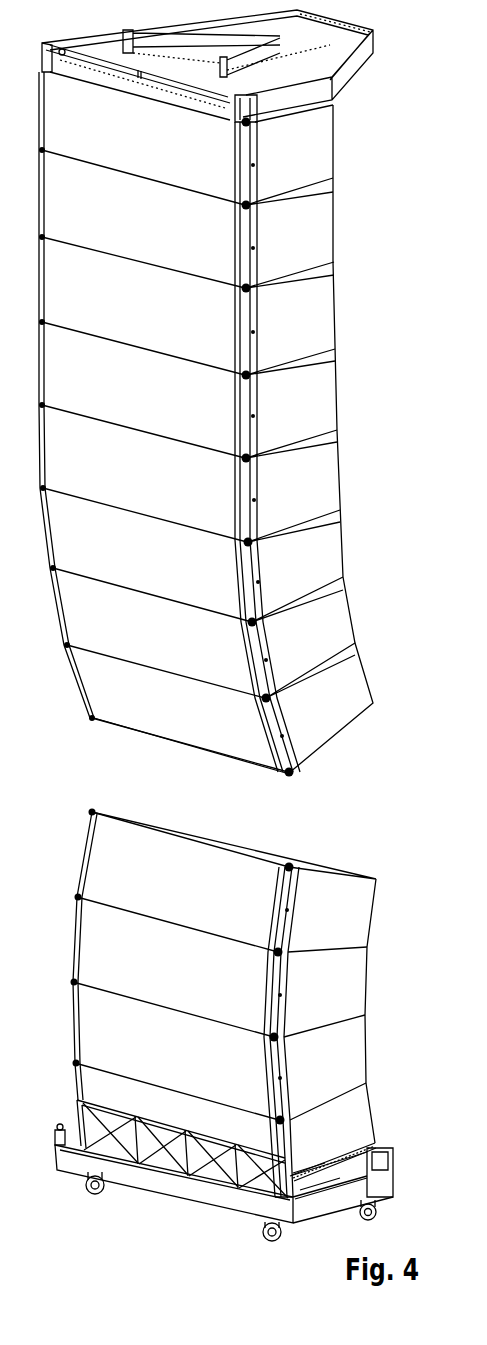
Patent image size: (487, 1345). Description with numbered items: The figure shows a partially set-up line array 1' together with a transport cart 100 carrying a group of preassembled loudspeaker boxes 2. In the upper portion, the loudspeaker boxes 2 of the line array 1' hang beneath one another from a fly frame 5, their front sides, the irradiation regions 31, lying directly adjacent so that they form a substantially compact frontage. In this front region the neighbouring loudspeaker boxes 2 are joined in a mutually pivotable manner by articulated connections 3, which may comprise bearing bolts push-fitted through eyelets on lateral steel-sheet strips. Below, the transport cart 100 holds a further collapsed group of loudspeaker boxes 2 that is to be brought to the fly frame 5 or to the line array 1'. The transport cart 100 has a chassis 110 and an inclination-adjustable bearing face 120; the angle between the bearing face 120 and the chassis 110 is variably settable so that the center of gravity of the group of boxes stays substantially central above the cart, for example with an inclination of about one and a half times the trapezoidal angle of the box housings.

The partially set-up line array 1' is at (223, 422).
The loudspeaker box 2 is at (253, 643).
The articulated connection 3 is at (267, 612).
The fly frame 5 is at (344, 78).
The irradiation region 31 is at (127, 142).
The transport cart 100 is at (398, 1147).
The chassis 110 is at (153, 1183).
The inclination-adjustable bearing face 120 is at (298, 1188).